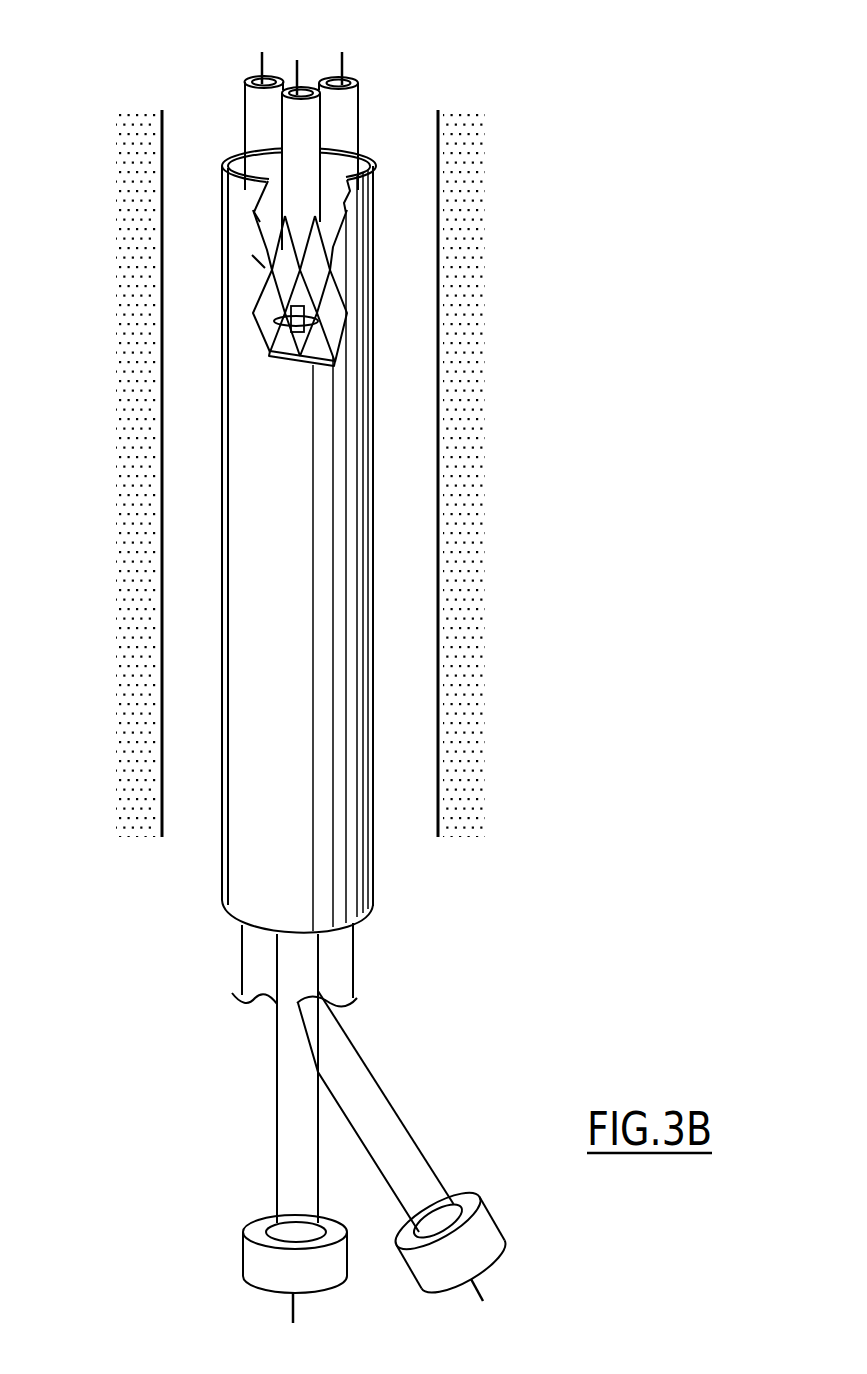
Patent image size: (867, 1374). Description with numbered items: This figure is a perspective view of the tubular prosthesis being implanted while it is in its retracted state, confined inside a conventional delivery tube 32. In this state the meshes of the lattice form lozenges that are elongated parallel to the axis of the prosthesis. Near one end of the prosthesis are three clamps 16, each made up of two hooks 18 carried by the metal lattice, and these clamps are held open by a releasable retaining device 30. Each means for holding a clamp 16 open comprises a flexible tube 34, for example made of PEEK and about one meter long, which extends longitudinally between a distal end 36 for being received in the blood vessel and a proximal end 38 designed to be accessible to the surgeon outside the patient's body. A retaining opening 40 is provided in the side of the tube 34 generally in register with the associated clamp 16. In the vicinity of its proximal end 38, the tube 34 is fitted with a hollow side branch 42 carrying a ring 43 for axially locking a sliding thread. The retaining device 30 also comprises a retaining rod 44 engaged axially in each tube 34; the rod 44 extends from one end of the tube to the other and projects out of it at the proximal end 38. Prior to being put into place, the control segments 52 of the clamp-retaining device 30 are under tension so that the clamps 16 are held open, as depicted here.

The clamp 16 is at (293, 343).
The hook 18 is at (272, 328).
The retaining device 30 is at (276, 470).
The delivery tube 32 is at (380, 202).
The flexible tube 34 is at (345, 125).
The distal end 36 is at (248, 70).
The proximal end 38 is at (344, 1113).
The retaining opening 40 is at (262, 315).
The hollow side branch 42 is at (388, 1143).
The ring 43 is at (483, 1233).
The retaining rod 44 is at (338, 65).
The control segment 52 is at (472, 1282).